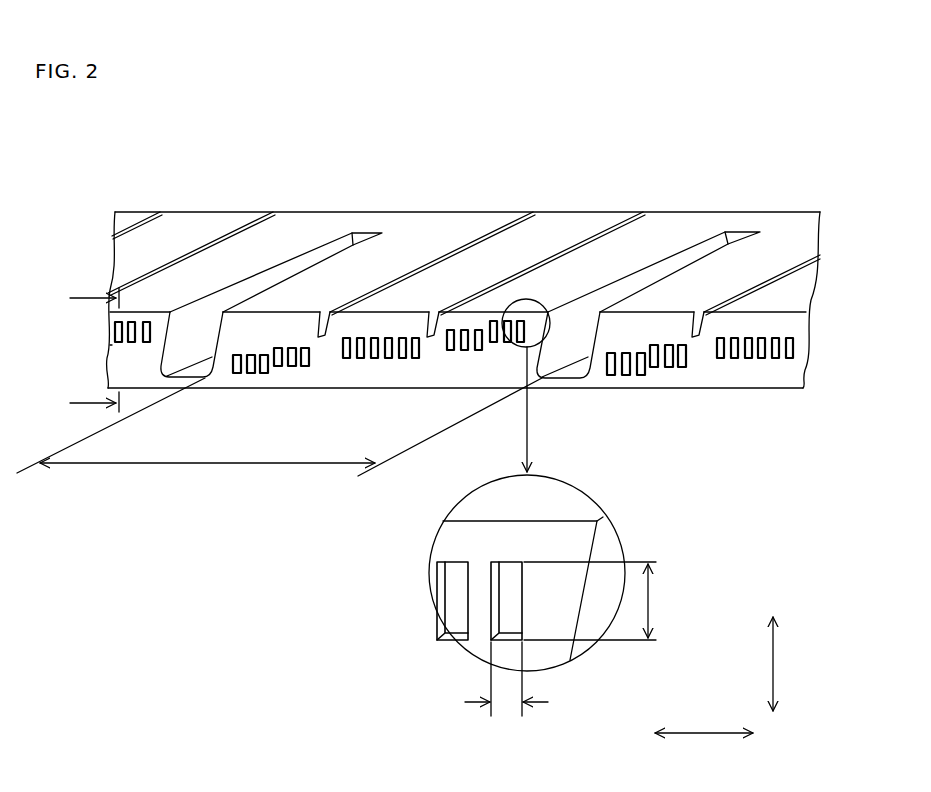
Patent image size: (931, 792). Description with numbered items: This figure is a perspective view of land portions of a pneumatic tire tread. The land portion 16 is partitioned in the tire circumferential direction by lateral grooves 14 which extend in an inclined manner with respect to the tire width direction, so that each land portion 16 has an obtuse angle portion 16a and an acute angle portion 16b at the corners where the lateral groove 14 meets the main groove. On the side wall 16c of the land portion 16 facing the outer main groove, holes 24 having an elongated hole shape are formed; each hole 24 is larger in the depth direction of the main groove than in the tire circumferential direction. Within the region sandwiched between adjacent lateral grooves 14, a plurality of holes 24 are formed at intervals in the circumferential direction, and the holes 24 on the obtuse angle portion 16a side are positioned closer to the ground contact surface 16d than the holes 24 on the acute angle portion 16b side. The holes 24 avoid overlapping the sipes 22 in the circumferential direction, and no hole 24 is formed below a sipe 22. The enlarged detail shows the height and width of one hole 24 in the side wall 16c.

The lateral groove 14 is at (190, 337).
The land portion 16 is at (132, 255).
The obtuse angle portion 16a is at (527, 299).
The acute angle portion 16b is at (232, 312).
The side wall 16c is at (327, 373).
The ground contact surface 16d is at (398, 300).
The sipe 22 is at (208, 237).
The hole 24 is at (114, 334).